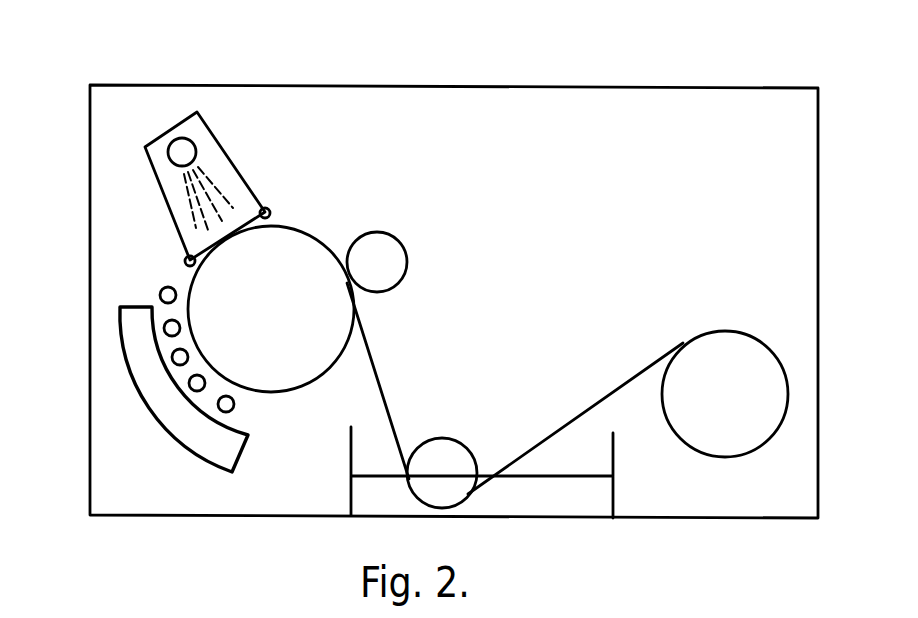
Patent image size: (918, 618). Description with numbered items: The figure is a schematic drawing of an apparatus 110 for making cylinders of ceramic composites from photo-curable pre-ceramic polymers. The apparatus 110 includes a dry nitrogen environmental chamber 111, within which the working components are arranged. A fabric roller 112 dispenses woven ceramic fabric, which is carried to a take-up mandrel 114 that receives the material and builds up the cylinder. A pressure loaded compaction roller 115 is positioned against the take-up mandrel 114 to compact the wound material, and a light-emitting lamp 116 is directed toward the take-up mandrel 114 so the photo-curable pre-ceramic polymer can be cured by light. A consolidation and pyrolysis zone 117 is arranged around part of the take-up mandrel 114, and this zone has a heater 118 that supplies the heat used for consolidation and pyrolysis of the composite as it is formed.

The apparatus 110 is at (653, 86).
The dry nitrogen environmental chamber 111 is at (582, 502).
The fabric roller 112 is at (770, 383).
The take-up mandrel 114 is at (302, 247).
The pressure loaded compaction roller 115 is at (360, 243).
The light-emitting lamp 116 is at (146, 153).
The consolidation and pyrolysis zone 117 is at (152, 283).
The heater 118 is at (180, 356).